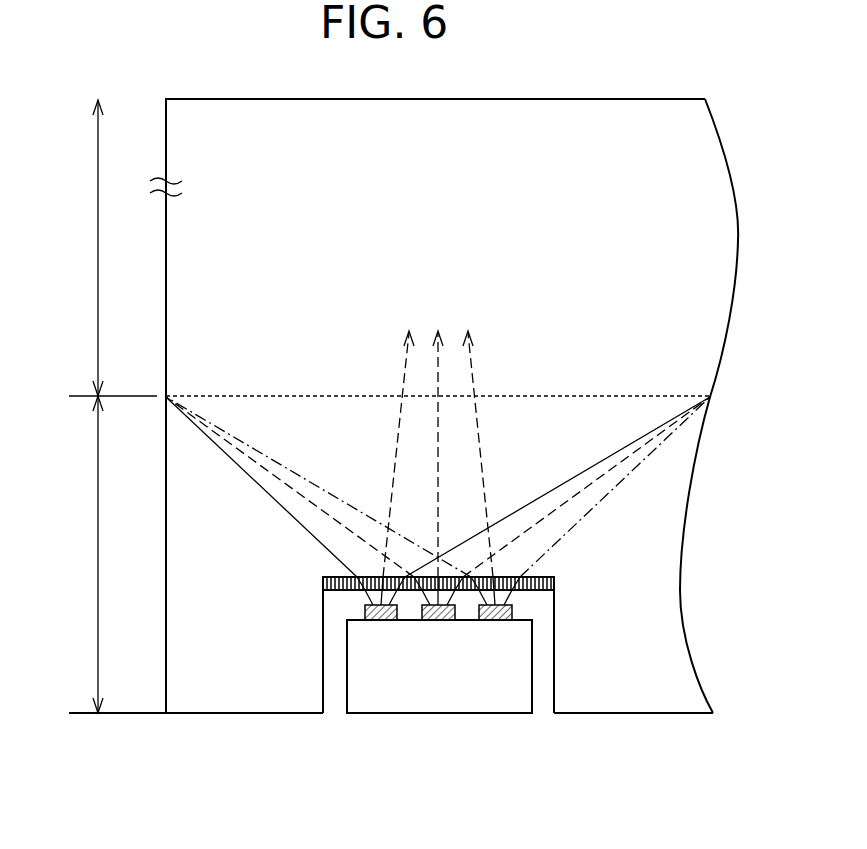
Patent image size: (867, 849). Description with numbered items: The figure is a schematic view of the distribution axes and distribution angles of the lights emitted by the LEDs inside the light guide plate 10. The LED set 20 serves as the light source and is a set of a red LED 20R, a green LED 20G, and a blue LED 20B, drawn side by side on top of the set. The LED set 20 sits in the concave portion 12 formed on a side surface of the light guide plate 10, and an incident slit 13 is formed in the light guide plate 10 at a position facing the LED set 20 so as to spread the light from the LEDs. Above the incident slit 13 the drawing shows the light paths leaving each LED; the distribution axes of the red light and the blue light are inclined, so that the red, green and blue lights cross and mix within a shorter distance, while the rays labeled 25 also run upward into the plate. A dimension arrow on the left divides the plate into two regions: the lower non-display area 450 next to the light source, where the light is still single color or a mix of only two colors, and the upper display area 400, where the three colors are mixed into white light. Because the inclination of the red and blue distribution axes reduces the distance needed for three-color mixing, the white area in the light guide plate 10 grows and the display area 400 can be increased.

The light guide plate 10 is at (165, 635).
The concave portion 12 is at (323, 677).
The incident slit 13 is at (554, 581).
The LED set 20 is at (500, 703).
The red LED 20R is at (376, 628).
The green LED 20G is at (438, 628).
The blue LED 20B is at (496, 628).
The light rays 25 is at (395, 453).
The display area 400 is at (97, 248).
The non-display area 450 is at (70, 554).